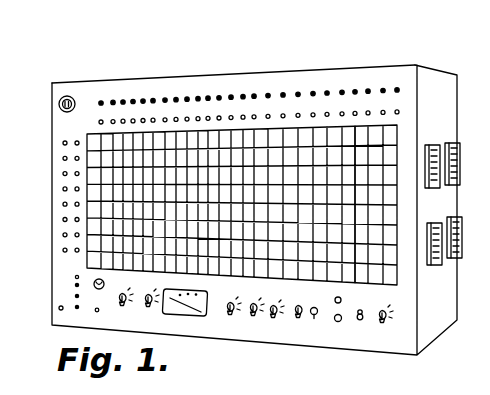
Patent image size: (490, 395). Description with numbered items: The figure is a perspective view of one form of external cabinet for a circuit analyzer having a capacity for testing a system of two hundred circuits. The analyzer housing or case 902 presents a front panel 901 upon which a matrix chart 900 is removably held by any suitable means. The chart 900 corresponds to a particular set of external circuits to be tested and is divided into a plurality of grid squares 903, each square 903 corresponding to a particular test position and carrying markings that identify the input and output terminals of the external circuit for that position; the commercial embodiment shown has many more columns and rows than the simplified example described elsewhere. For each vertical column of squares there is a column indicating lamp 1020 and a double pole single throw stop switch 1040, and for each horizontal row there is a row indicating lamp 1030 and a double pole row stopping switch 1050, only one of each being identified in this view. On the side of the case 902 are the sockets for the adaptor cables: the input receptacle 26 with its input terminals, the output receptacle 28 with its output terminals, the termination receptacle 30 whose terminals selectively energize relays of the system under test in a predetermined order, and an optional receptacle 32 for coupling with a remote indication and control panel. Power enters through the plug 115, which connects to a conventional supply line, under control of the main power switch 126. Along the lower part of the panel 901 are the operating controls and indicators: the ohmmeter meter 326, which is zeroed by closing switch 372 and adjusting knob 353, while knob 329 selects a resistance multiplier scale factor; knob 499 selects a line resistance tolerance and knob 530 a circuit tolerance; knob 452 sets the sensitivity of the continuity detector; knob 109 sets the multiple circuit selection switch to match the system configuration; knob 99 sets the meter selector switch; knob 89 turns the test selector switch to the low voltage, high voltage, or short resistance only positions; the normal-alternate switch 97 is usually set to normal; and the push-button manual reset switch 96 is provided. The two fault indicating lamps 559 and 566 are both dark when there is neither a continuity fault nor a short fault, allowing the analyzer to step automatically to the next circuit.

The input receptacle 26 is at (433, 139).
The output receptacle 28 is at (452, 138).
The termination receptacle 30 is at (433, 221).
The receptacle 32 is at (454, 216).
The knob 89 is at (123, 306).
The manual reset switch 96 is at (321, 323).
The normal-alternate switch 97 is at (360, 327).
The knob 99 is at (149, 307).
The knob 109 is at (383, 323).
The plug 115 is at (58, 107).
The main power switch 126 is at (58, 307).
The meter 326 is at (205, 316).
The knob 329 is at (231, 315).
The knob 353 is at (100, 289).
The switch 372 is at (95, 311).
The knob 452 is at (299, 318).
The knob 499 is at (253, 316).
The knob 530 is at (274, 318).
The fault indicating lamp 559 is at (341, 300).
The fault indicating lamp 566 is at (338, 322).
The matrix chart 900 is at (406, 125).
The front panel 901 is at (328, 80).
The analyzer housing 902 is at (256, 72).
The grid square 903 is at (393, 260).
The column indicating lamp 1020 is at (98, 119).
The row indicating lamp 1030 is at (75, 142).
The stop switch 1040 is at (103, 101).
The row stopping switch 1050 is at (64, 145).